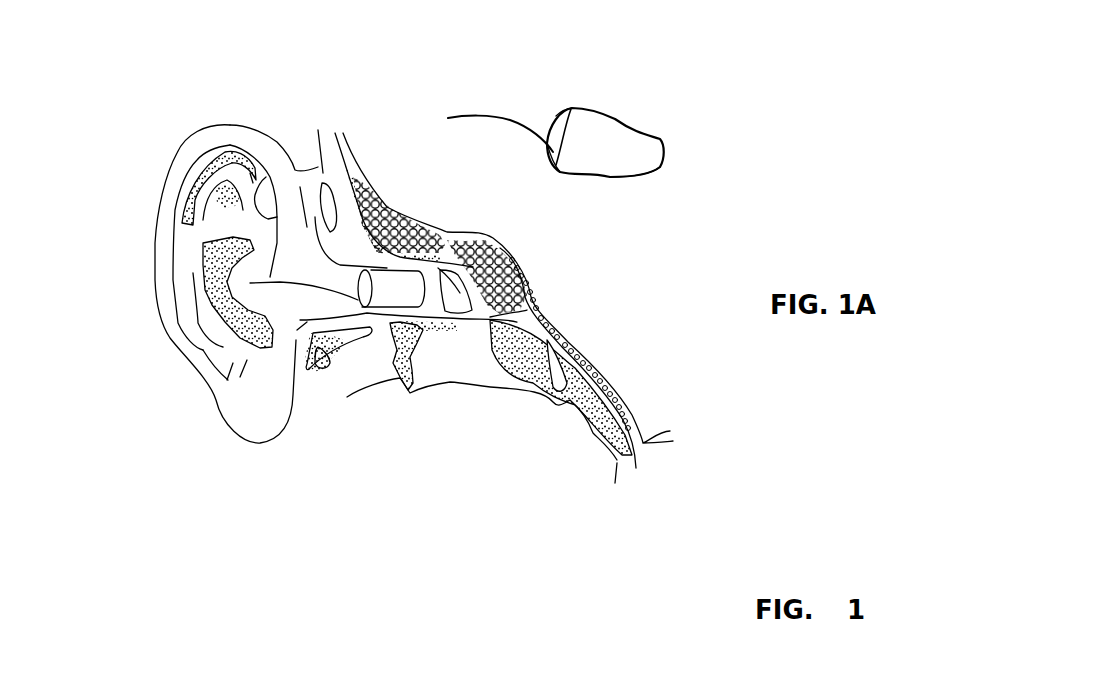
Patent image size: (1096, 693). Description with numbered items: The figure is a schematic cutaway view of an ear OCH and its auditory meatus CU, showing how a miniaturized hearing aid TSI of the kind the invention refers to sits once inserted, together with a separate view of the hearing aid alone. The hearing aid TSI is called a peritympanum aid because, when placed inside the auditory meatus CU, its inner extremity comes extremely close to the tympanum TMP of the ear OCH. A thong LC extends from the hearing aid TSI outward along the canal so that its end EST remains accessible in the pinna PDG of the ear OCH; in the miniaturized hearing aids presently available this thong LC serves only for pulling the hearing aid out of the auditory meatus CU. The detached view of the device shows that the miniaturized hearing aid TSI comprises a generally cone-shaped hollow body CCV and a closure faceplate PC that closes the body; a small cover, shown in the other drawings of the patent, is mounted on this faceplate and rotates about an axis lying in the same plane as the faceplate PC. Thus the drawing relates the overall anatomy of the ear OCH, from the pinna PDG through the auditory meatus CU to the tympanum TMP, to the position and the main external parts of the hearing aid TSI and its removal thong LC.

In FIG. 1, the pinna PDG is at (190, 225).
In FIG. 1, the auditory meatus CU is at (443, 227).
In FIG. 1, the tympanum TMP is at (514, 271).
In FIG. 1, the end of thong EST is at (250, 283).
In FIG. 1A, the end of thong EST is at (448, 118).
In FIG. 1, the thong LC is at (300, 284).
In FIG. 1A, the thong LC is at (497, 115).
In FIG. 1, the ear OCH is at (416, 410).
In FIG. 1, the miniaturized hearing aid TSI is at (413, 308).
In FIG. 1A, the miniaturized hearing aid TSI is at (686, 128).
In FIG. 1A, the closure faceplate PC is at (558, 103).
In FIG. 1A, the hollow body CCV is at (643, 176).